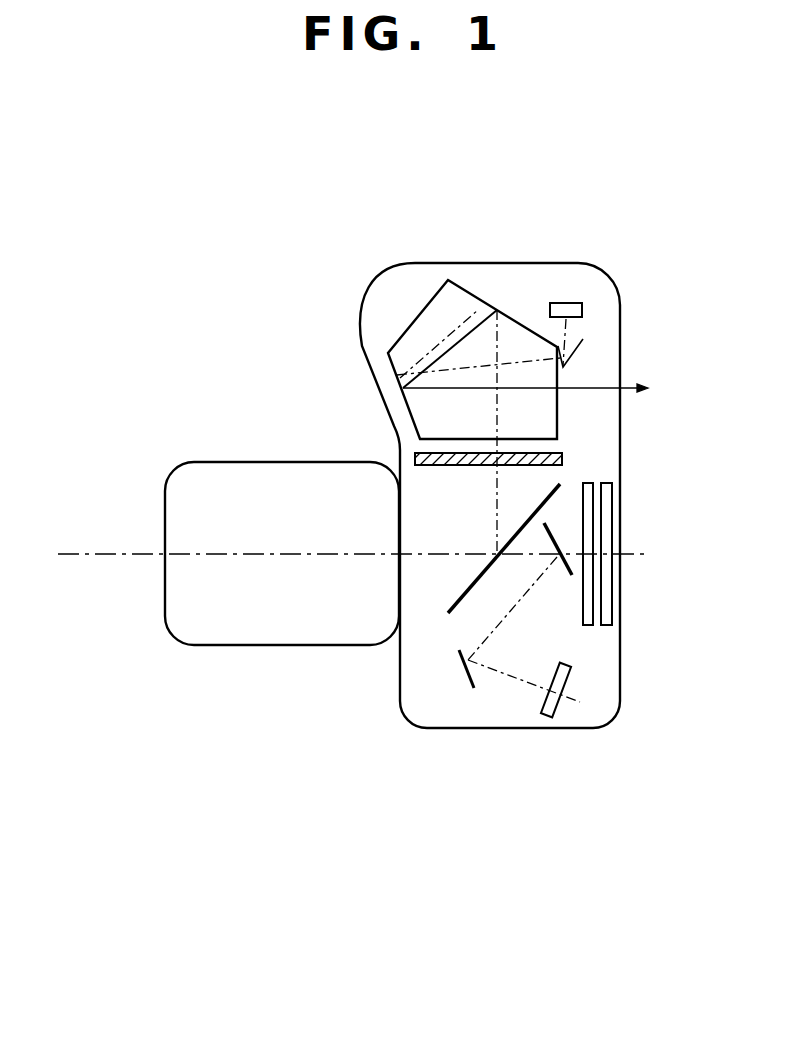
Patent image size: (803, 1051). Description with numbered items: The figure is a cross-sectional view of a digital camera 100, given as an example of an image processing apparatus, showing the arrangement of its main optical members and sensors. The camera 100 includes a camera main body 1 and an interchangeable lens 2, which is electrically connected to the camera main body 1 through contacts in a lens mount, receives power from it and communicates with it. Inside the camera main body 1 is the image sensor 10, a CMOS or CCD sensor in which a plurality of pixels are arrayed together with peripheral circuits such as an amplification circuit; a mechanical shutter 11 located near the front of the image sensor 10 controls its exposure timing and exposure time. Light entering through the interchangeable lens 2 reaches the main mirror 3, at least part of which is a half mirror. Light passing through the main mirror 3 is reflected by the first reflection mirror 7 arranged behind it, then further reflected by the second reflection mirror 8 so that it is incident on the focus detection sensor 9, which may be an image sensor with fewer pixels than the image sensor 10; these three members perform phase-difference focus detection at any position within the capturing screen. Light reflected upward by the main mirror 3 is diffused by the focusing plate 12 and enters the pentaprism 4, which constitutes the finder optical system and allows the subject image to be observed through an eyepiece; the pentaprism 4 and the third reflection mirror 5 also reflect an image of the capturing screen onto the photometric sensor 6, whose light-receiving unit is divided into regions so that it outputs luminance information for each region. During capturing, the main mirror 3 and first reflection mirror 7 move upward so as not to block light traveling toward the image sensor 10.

The camera 100 is at (373, 545).
The camera main body 1 is at (401, 268).
The interchangeable lens 2 is at (270, 462).
The main mirror 3 is at (497, 553).
The pentaprism 4 is at (448, 281).
The third reflection mirror 5 is at (583, 339).
The photometric sensor (AE sensor) 6 is at (568, 302).
The first reflection mirror 7 is at (572, 576).
The second reflection mirror 8 is at (468, 660).
The focus detection sensor (AF sensor) 9 is at (560, 708).
The image sensor 10 is at (613, 518).
The mechanical shutter 11 is at (588, 483).
The focusing plate 12 is at (562, 459).